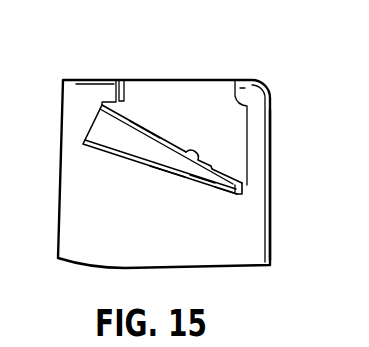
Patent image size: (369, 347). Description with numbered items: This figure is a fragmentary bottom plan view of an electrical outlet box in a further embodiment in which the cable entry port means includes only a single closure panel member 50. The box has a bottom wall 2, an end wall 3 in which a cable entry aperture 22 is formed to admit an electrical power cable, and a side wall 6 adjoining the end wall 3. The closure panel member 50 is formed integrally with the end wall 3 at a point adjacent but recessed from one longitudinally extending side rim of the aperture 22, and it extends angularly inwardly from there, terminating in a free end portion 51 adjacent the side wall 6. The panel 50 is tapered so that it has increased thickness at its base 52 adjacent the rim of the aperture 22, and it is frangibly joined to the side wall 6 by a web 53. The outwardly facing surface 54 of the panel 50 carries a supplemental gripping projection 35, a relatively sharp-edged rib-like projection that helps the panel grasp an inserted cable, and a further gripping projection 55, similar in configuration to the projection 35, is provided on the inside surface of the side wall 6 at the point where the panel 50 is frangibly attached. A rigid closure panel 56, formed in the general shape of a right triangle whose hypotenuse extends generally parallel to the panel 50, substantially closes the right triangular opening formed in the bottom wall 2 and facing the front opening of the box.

The bottom wall 2 is at (152, 252).
The end wall 3 is at (85, 80).
The side wall 6 is at (268, 157).
The cable entry aperture 22 is at (132, 91).
The gripping projection 35 is at (173, 172).
The closure panel member 50 is at (123, 143).
The free end portion 51 is at (203, 179).
The base 52 is at (96, 128).
The web 53 is at (228, 187).
The outwardly facing surface 54 is at (143, 130).
The further gripping projection 55 is at (242, 183).
The rigid closure panel 56 is at (228, 121).